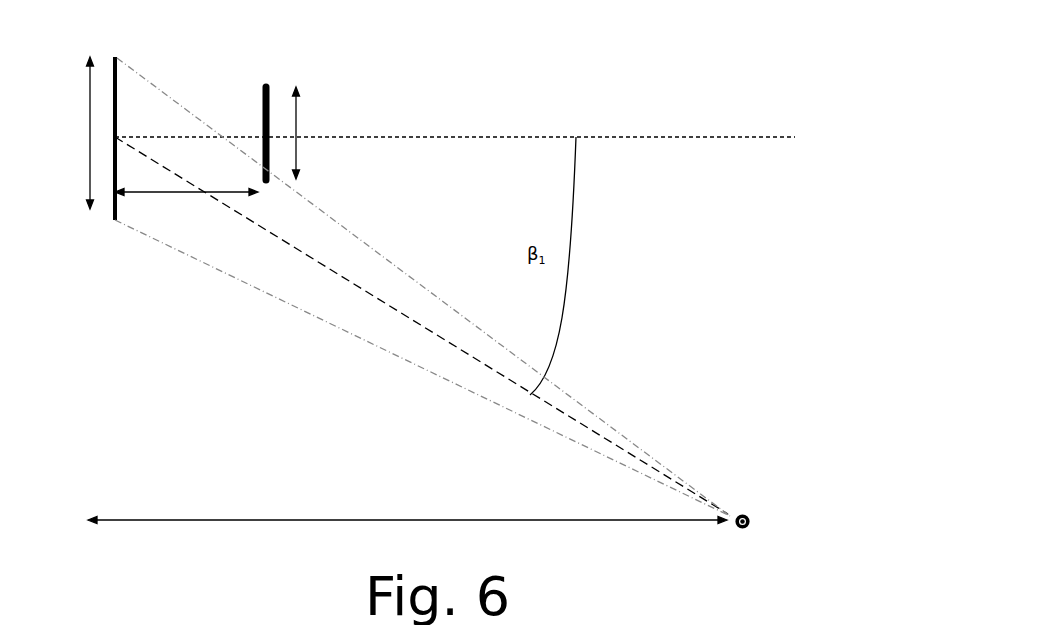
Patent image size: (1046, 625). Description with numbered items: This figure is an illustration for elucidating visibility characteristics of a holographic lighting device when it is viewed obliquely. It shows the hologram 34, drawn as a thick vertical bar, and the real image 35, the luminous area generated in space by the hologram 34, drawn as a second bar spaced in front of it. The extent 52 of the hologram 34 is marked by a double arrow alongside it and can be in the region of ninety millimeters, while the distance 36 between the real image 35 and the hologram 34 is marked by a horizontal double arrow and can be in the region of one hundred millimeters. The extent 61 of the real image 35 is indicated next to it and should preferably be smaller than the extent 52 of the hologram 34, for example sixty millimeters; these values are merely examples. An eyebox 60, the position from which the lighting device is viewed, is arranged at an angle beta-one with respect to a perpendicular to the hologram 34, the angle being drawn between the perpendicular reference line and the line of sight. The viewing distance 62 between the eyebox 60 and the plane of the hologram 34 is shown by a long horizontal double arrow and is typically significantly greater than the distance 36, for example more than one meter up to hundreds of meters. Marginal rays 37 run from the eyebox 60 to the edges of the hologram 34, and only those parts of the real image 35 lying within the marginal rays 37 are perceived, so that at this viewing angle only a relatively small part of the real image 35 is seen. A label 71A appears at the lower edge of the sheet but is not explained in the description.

The hologram 34 is at (114, 118).
The real image 35 is at (272, 120).
The distance between the real image and the hologram 36 is at (168, 192).
The marginal rays 37 is at (342, 225).
The extent of the hologram 52 is at (87, 112).
The eyebox 60 is at (746, 507).
The extent of the real image 61 is at (300, 123).
The viewing distance 62 is at (194, 520).
The sub-figure reference 71A is at (203, 624).